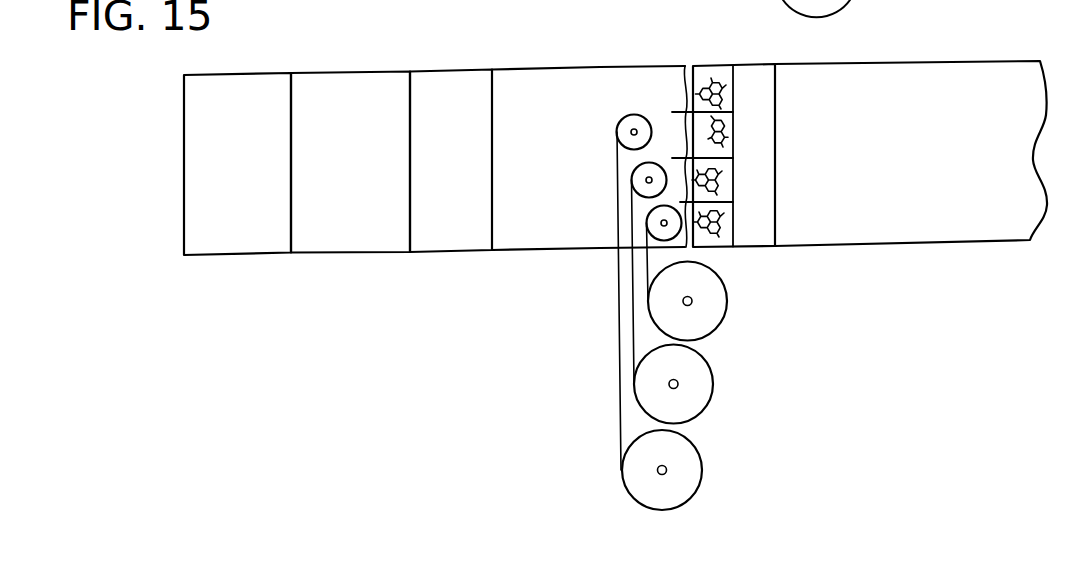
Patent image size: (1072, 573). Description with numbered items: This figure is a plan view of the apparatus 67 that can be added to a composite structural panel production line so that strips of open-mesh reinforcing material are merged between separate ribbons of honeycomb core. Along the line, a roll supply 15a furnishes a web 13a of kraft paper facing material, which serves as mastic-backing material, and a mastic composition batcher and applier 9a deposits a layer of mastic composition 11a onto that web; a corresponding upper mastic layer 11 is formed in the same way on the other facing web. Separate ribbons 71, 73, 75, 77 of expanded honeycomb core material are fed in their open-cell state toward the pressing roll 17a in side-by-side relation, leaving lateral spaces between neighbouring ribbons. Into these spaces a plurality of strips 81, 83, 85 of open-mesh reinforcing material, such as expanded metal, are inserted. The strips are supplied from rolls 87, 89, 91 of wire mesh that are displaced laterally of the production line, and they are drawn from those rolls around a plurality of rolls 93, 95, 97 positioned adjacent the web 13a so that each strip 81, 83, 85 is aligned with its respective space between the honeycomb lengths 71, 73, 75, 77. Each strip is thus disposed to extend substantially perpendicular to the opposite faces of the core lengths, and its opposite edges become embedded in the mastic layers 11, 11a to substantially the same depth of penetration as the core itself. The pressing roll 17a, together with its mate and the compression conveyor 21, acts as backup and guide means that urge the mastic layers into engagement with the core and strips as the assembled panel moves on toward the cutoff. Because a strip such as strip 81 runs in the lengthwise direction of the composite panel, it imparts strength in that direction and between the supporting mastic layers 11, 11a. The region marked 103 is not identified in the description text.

The roll supply of facing material 15a is at (234, 73).
The web of facing material 13a is at (349, 83).
The mastic composition batcher and applier 9a is at (450, 78).
The mastic-composition layer 11a is at (553, 80).
The transfer station 103 is at (750, 72).
The mastic-composition layer 11 is at (925, 77).
The strip of open-mesh reinforcing material 85 is at (675, 111).
The strip of open-mesh reinforcing material 83 is at (682, 137).
The strip of open-mesh reinforcing material 81 is at (687, 178).
The ribbon of expanded honeycomb core material 77 is at (723, 94).
The ribbon of expanded honeycomb core material 75 is at (728, 141).
The ribbon of expanded honeycomb core material 73 is at (718, 188).
The ribbon of expanded honeycomb core material 71 is at (723, 232).
The roll 97 is at (616, 131).
The roll 95 is at (632, 175).
The roll 93 is at (672, 235).
The roll of wire mesh strip 87 is at (715, 309).
The roll of wire mesh strip 89 is at (703, 385).
The roll of wire mesh strip 91 is at (690, 470).
The apparatus for inserting reinforcing strips 67 is at (596, 290).
The pressing roll 17a is at (848, 0).
The compression conveyor 21 is at (957, 0).